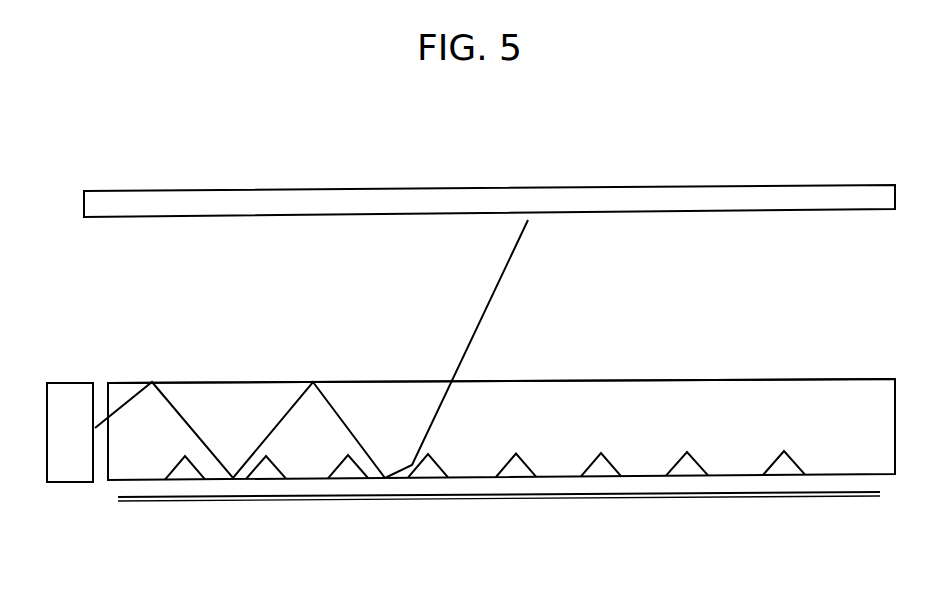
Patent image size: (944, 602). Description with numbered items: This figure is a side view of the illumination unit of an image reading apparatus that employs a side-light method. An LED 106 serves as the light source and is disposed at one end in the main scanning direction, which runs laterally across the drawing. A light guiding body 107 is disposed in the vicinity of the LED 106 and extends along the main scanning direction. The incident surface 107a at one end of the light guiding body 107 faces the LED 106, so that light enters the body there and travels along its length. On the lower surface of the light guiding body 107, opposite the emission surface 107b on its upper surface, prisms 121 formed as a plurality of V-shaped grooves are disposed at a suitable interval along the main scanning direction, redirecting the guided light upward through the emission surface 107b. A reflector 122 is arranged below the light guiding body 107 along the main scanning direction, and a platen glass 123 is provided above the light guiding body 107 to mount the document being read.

The LED 106 is at (67, 483).
The light guiding body 107 is at (585, 374).
The incident surface 107a is at (105, 455).
The emission surface 107b is at (670, 378).
The prisms 121 is at (274, 466).
The reflector 122 is at (628, 500).
The platen glass 123 is at (683, 187).